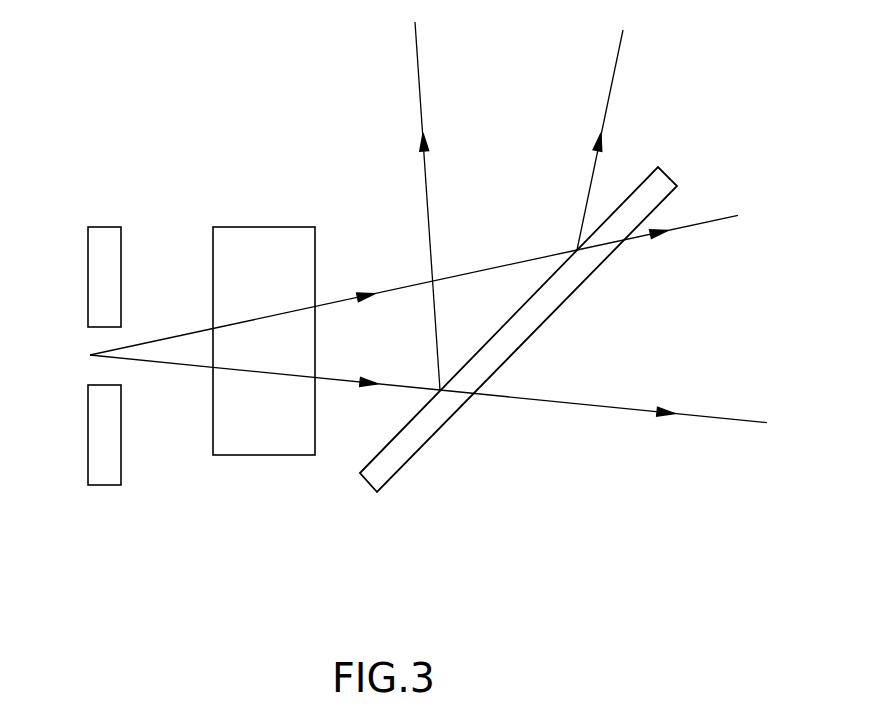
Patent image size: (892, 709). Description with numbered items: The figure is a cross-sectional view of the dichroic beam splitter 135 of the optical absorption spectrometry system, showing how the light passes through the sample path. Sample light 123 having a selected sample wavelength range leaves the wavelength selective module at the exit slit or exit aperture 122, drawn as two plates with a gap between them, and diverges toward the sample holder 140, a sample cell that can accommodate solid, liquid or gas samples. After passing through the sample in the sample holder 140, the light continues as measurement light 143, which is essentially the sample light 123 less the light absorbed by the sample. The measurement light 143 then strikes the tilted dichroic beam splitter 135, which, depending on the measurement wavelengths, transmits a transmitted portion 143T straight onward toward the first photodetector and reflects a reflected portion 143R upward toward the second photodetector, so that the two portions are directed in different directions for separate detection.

The exit aperture 122 is at (95, 372).
The sample light 123 is at (157, 338).
The sample holder 140 is at (263, 430).
The measurement light 143 is at (417, 322).
The dichroic beam splitter 135 is at (405, 452).
The transmitted portion 143T is at (698, 225).
The reflected portion 143R is at (610, 90).